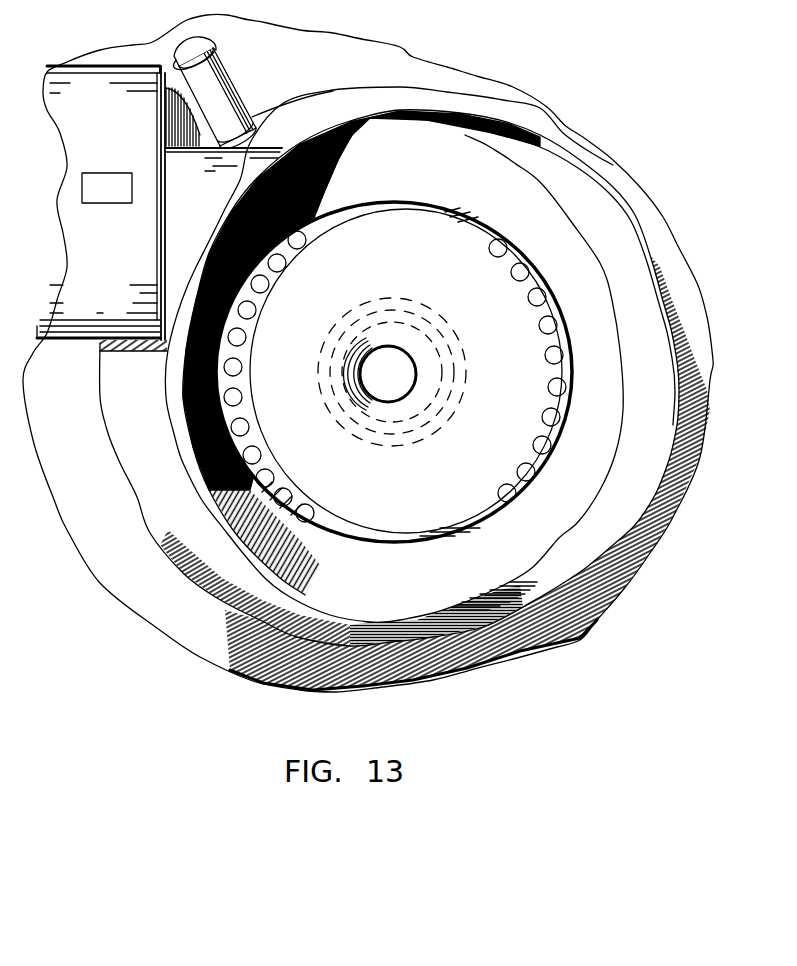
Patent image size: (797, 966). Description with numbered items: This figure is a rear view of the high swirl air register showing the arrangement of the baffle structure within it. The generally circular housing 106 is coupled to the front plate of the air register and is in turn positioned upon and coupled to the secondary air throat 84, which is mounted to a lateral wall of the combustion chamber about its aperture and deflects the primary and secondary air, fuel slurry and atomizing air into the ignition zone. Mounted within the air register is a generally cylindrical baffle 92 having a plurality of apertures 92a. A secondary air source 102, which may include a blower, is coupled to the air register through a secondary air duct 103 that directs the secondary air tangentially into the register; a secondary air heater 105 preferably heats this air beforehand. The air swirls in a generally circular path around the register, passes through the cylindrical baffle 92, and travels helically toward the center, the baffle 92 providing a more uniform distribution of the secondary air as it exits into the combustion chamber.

The secondary air throat 84 is at (366, 418).
The cylindrical baffle 92 is at (303, 250).
The apertures 92a is at (557, 387).
The secondary air source 102 is at (131, 281).
The secondary air duct 103 is at (226, 204).
The secondary air heater 105 is at (107, 188).
The housing 106 is at (160, 407).